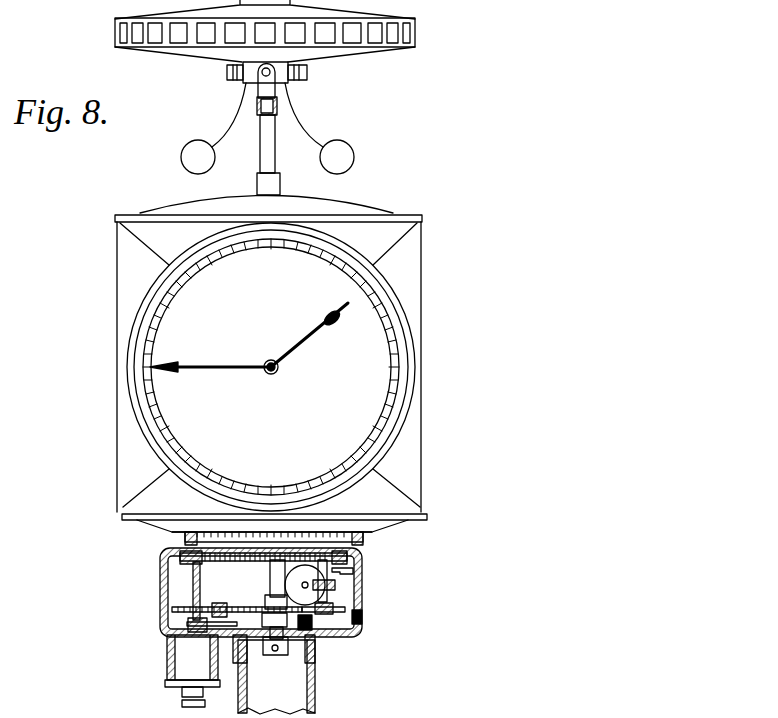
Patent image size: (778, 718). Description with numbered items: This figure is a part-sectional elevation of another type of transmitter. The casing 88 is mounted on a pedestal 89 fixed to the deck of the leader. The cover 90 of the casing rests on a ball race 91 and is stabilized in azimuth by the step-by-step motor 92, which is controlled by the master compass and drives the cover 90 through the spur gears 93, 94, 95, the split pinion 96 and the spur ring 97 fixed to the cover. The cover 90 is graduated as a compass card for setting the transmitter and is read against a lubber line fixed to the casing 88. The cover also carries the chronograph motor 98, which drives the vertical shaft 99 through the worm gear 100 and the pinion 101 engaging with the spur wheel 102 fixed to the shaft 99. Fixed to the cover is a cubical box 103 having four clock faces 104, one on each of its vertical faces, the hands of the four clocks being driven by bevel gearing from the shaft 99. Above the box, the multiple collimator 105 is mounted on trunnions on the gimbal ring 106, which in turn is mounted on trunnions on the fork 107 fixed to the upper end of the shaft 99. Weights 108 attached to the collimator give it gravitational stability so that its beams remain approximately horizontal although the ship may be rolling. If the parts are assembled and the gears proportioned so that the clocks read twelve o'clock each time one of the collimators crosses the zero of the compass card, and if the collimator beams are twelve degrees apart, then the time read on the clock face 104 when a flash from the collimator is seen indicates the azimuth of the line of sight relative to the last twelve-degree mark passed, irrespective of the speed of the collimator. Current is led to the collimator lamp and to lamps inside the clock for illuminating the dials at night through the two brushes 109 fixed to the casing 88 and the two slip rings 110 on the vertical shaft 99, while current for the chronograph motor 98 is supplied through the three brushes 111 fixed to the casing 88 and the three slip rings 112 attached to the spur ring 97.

The casing 88 is at (163, 568).
The pedestal 89 is at (317, 677).
The cover 90 is at (377, 530).
The ball race 91 is at (187, 543).
The step-by-step motor 92 is at (183, 650).
The spur gear 93 is at (205, 627).
The spur gear 94 is at (188, 620).
The spur gear 95 is at (173, 610).
The split pinion 96 is at (183, 556).
The spur ring 97 is at (347, 556).
The chronograph motor 98 is at (334, 602).
The vertical shaft 99 is at (270, 130).
The worm gear 100 is at (325, 585).
The pinion 101 is at (340, 608).
The spur wheel 102 is at (250, 613).
The cubical box 103 is at (403, 230).
The clock face 104 is at (422, 335).
The multiple collimator 105 is at (413, 25).
The gimbal ring 106 is at (297, 82).
The fork 107 is at (267, 87).
The weights 108 is at (197, 145).
The brushes 109 is at (360, 617).
The slip rings 110 is at (313, 655).
The brushes 111 is at (327, 566).
The slip rings 112 is at (348, 568).